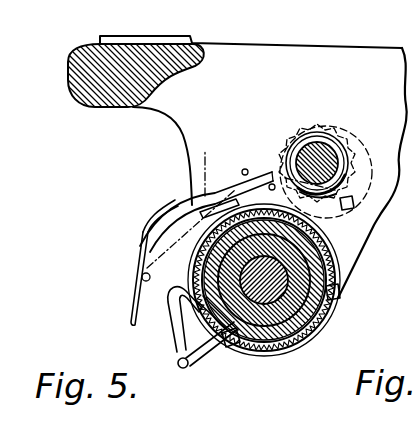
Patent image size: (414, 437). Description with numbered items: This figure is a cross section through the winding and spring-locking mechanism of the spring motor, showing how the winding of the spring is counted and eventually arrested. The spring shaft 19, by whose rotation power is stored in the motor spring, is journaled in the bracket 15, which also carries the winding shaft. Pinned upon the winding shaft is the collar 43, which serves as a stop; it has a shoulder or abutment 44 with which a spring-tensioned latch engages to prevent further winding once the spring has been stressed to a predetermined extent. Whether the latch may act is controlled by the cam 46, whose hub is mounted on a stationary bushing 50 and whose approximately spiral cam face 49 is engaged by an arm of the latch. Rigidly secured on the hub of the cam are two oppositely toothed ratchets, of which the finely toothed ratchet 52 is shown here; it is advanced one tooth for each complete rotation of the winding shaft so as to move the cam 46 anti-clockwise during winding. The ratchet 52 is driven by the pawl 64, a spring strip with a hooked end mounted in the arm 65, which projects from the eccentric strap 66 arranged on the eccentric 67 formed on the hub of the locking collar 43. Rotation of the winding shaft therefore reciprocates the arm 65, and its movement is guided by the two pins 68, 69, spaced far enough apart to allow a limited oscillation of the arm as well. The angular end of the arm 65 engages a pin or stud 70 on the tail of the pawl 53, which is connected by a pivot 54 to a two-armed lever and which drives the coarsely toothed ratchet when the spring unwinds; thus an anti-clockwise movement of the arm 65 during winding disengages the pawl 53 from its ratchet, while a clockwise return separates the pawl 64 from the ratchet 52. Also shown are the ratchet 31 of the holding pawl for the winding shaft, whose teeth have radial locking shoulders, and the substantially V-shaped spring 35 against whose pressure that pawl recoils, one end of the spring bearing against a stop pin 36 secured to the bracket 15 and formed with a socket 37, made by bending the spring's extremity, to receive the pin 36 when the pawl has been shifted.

The bracket 15 is at (356, 262).
The spring shaft 19 is at (290, 312).
The ratchet 31 is at (352, 138).
The spring 35 is at (185, 319).
The pin 36 is at (204, 378).
The socket 37 is at (178, 360).
The collar 43 is at (326, 145).
The shoulder 44 is at (344, 172).
The cam 46 is at (322, 329).
The cam face 49 is at (324, 240).
The bushing 50 is at (318, 314).
The ratchet 52 is at (230, 348).
The pawl 53 is at (205, 196).
The pivot 54 is at (176, 220).
The pawl 64 is at (215, 212).
The arm 65 is at (163, 224).
The eccentric strap 66 is at (311, 127).
The eccentric 67 is at (335, 195).
The pin 68 is at (246, 169).
The pin 69 is at (271, 184).
The pin 70 is at (142, 277).